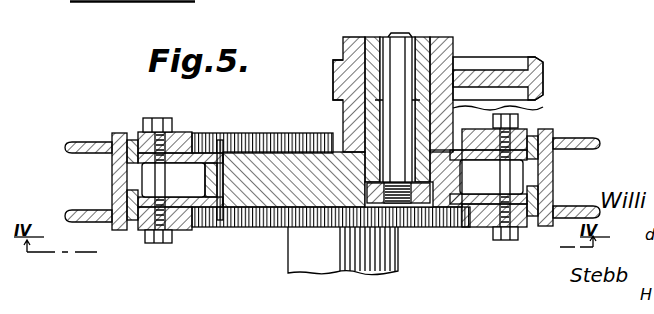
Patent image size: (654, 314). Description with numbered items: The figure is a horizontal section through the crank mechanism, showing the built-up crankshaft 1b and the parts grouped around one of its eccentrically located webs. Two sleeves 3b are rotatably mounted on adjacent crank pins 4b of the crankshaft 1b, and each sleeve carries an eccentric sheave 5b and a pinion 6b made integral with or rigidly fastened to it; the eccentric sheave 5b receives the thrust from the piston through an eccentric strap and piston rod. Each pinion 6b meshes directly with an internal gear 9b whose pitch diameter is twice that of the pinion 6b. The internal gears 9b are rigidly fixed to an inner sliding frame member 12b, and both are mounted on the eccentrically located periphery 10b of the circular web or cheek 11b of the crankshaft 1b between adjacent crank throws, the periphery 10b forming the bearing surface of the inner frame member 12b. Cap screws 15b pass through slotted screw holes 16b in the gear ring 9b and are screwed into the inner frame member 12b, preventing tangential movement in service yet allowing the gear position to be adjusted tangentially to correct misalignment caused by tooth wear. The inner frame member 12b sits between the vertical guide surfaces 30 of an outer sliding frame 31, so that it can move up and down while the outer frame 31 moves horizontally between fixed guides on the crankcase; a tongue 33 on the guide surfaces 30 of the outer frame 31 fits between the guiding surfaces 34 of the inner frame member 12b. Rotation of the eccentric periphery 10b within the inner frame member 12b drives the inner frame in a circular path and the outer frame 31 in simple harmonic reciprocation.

The outer sliding frame 31 is at (97, 140).
The vertical guide surfaces 30 is at (118, 193).
The tongue 33 is at (144, 181).
The guiding surfaces 34 is at (137, 230).
The inner sliding frame member 12b is at (132, 135).
The cap screws 15b is at (160, 128).
The internal gears 9b is at (207, 133).
The periphery 10b is at (247, 133).
The pinion 6b is at (332, 128).
The web or cheek 11b is at (268, 158).
The crank pins 4b is at (453, 63).
The eccentric sheaves 5b is at (542, 61).
The sleeves 3b is at (543, 108).
The crankshaft 1b is at (330, 185).
The slotted screw holes 16b is at (532, 223).